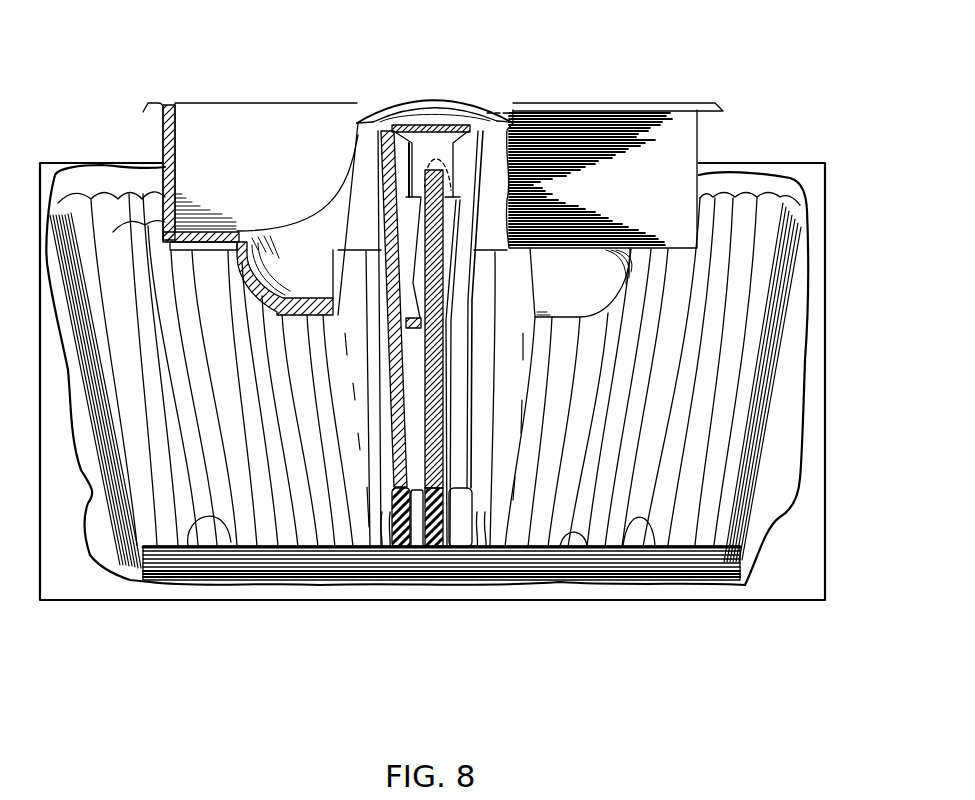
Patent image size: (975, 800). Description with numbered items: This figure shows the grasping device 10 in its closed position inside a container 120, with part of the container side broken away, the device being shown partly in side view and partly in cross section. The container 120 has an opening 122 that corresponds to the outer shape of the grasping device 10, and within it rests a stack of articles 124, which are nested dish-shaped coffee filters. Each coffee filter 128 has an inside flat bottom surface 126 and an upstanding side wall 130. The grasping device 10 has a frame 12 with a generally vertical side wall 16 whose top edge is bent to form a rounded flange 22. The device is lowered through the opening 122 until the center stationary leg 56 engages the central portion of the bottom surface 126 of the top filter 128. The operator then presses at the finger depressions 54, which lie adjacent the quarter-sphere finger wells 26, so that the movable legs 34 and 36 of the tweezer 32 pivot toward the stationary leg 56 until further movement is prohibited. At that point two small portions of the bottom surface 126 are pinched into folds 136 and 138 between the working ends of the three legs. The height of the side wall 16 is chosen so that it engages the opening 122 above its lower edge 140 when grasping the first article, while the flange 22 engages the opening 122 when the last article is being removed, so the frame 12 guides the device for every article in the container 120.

The grasping device 10 is at (625, 80).
The frame 12 is at (678, 104).
The side wall 16 is at (162, 135).
The flange 22 is at (722, 108).
The finger well 26 is at (320, 266).
The tweezer 32 is at (432, 125).
The movable leg 34 is at (396, 398).
The movable leg 36 is at (473, 392).
The finger depression 54 is at (388, 146).
The stationary leg 56 is at (467, 475).
The container 120 is at (826, 222).
The opening 122 is at (700, 164).
The stack of articles 124 is at (770, 412).
The bottom surface 126 is at (583, 560).
The coffee filter 128 is at (657, 575).
The side wall of filter 130 is at (230, 545).
The fold 136 is at (467, 487).
The fold 138 is at (402, 488).
The lower edge 140 is at (172, 253).